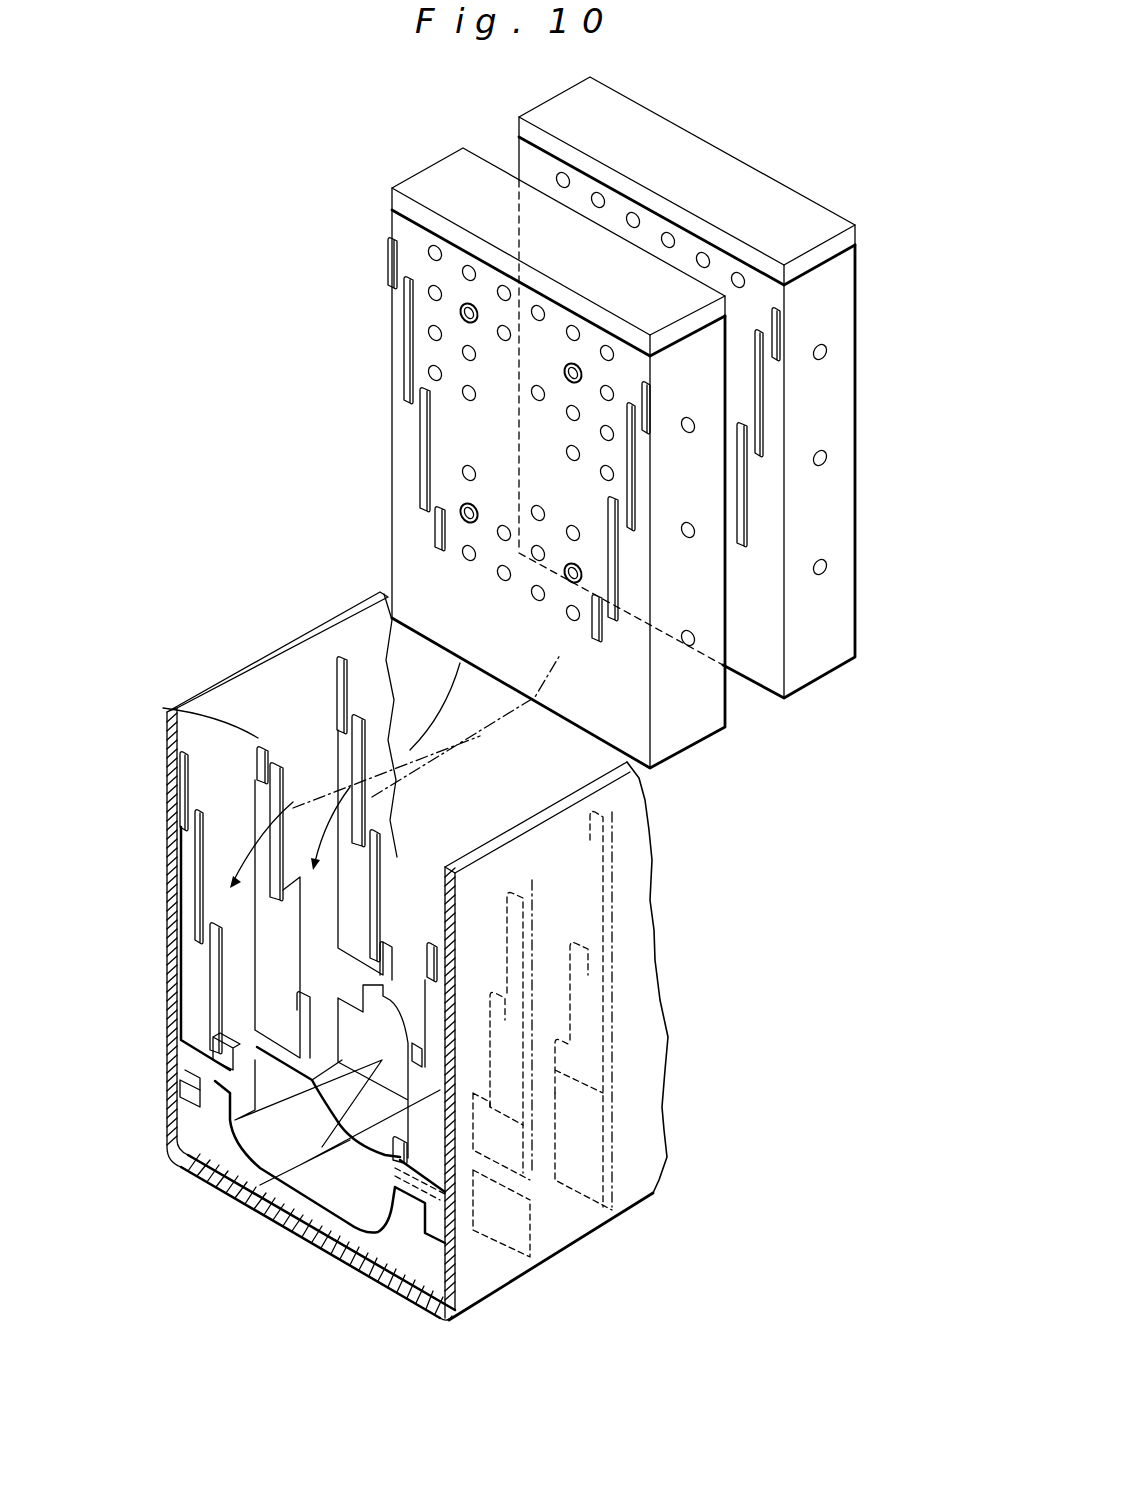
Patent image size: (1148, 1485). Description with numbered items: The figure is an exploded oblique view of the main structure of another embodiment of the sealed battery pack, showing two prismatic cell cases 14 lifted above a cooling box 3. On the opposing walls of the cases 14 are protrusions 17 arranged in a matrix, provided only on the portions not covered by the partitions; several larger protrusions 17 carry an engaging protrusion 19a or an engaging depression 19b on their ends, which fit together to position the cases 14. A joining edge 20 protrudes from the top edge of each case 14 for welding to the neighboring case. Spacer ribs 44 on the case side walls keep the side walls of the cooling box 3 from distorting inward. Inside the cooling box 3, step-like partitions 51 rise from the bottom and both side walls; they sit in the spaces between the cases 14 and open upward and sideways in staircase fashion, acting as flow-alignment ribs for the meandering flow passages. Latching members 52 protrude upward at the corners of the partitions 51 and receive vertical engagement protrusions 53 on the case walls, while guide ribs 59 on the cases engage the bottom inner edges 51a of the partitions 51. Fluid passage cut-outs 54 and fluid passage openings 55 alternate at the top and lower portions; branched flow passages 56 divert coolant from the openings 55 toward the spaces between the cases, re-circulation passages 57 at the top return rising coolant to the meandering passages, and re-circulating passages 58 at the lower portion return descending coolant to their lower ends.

The cooling box 3 is at (210, 670).
The case 14 is at (534, 97).
The protrusions 17 is at (430, 338).
The engaging protrusion 19a is at (463, 313).
The engaging depression 19b is at (463, 512).
The joining edge 20 is at (447, 213).
The spacer ribs 44 is at (695, 425).
The step-like partition 51 is at (195, 975).
The bottom inner edge 51a is at (215, 1058).
The latching member 52 is at (195, 818).
The engagement protrusion 53 is at (386, 258).
The fluid passage cut-out 54 is at (234, 788).
The fluid passage opening 55 is at (190, 1085).
The branched flow passage 56 is at (205, 1125).
The re-circulation passage 57 is at (340, 660).
The re-circulating passage 58 is at (240, 1148).
The guide rib 59 is at (434, 530).